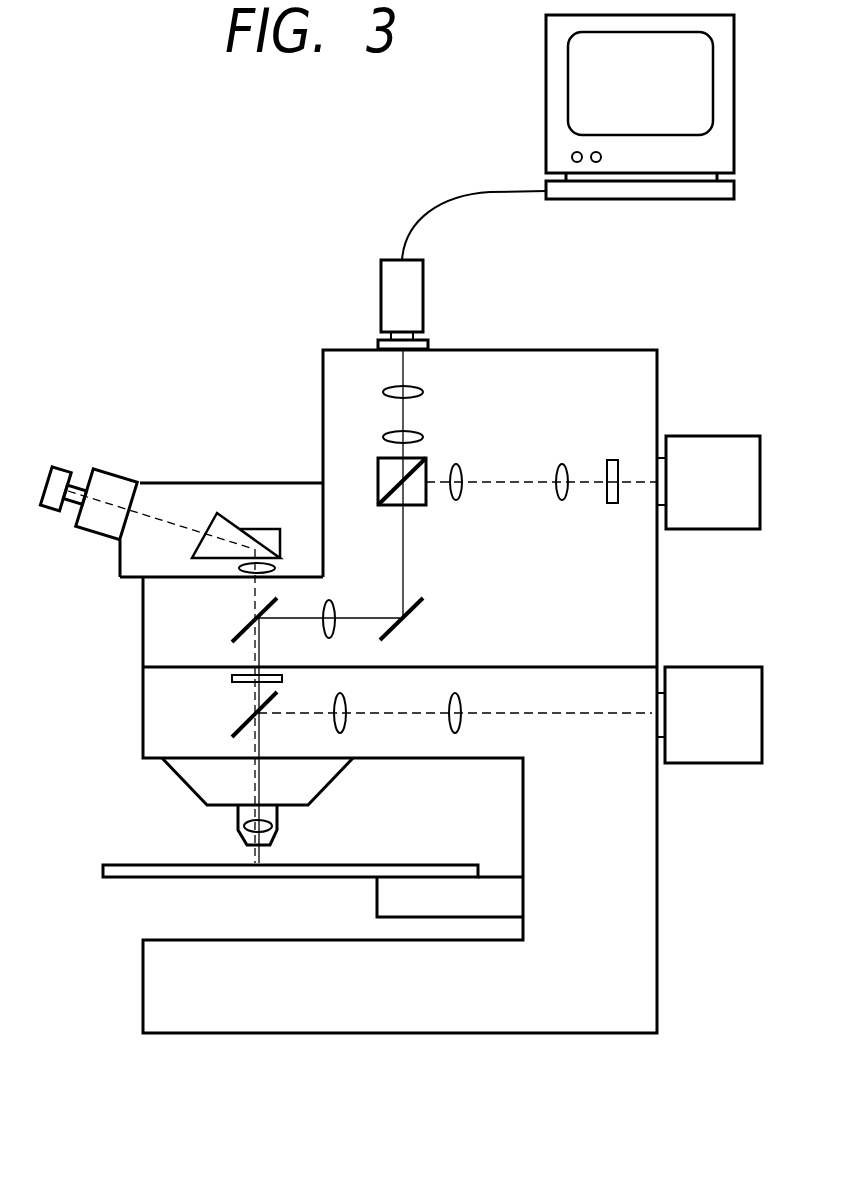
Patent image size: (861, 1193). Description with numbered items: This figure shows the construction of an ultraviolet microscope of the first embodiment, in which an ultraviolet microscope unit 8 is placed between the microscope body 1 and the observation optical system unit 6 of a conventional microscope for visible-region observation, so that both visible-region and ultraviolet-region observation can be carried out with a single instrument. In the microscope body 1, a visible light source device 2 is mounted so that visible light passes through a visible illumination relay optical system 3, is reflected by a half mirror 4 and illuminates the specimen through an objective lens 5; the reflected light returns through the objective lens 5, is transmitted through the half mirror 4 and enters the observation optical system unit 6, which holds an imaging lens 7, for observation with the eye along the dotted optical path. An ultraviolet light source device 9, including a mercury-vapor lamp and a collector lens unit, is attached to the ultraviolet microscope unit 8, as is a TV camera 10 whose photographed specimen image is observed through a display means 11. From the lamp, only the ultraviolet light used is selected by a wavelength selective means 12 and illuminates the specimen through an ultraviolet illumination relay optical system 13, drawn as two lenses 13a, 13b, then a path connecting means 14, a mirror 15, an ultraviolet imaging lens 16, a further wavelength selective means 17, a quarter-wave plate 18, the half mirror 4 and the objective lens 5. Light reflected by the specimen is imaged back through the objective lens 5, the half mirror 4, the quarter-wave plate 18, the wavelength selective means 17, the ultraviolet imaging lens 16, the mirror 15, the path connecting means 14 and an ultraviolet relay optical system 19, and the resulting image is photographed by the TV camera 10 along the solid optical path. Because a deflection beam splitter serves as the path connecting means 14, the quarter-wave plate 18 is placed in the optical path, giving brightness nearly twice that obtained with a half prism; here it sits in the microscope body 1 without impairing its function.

The microscope body 1 is at (648, 914).
The visible light source device 2 is at (724, 677).
The visible illumination relay optical system 3 is at (465, 739).
The half mirror 4 is at (232, 726).
The objective lens 5 is at (278, 824).
The observation optical system unit 6 is at (172, 490).
The imaging lens 7 is at (238, 566).
The ultraviolet microscope unit 8 is at (645, 565).
The ultraviolet light source device 9 is at (724, 445).
The TV camera 10 is at (418, 287).
The display means 11 is at (546, 97).
The wavelength selective means 12 is at (613, 460).
The ultraviolet illumination relay optical system 13 is at (507, 524).
The lens 13a is at (549, 504).
The lens 13b is at (458, 500).
The path connecting means 14 is at (378, 467).
The mirror 15 is at (414, 633).
The ultraviolet imaging lens 16 is at (331, 598).
The wavelength selective means 17 is at (232, 633).
The quarter-wave plate 18 is at (232, 677).
The ultraviolet relay optical system 19 is at (430, 385).